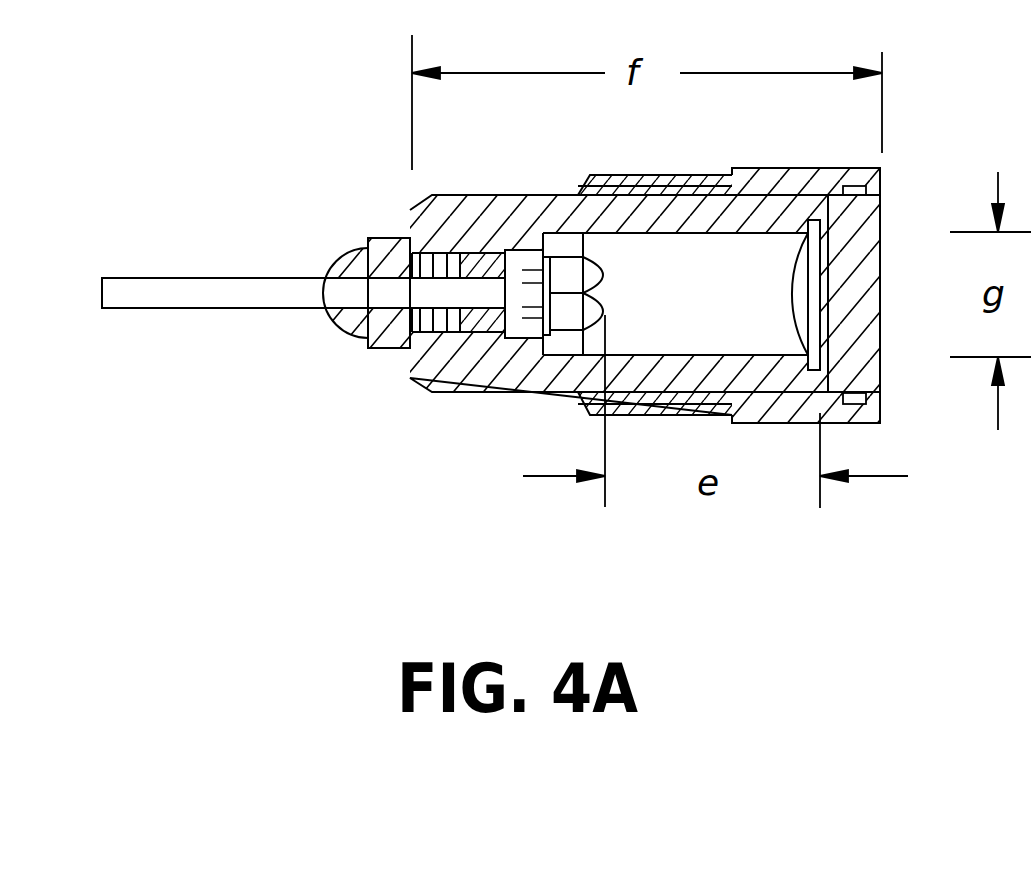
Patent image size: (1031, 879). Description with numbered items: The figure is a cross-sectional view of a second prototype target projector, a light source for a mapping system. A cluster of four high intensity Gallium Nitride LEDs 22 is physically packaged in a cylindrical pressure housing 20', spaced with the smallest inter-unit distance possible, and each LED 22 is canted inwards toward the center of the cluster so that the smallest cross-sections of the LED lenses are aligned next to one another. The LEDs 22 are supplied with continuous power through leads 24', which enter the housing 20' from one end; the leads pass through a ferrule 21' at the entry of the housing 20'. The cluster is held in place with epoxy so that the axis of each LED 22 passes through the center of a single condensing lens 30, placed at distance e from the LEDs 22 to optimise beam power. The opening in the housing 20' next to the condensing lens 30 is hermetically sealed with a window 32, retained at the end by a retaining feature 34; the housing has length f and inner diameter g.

The cylindrical pressure housing 20' is at (491, 329).
The fiber ferrule 21' is at (497, 380).
The high intensity LEDs 22 is at (600, 258).
The leads 24' is at (303, 338).
The condensing lens 30 is at (792, 278).
The window 32 is at (865, 248).
The retaining ring 34 is at (862, 423).